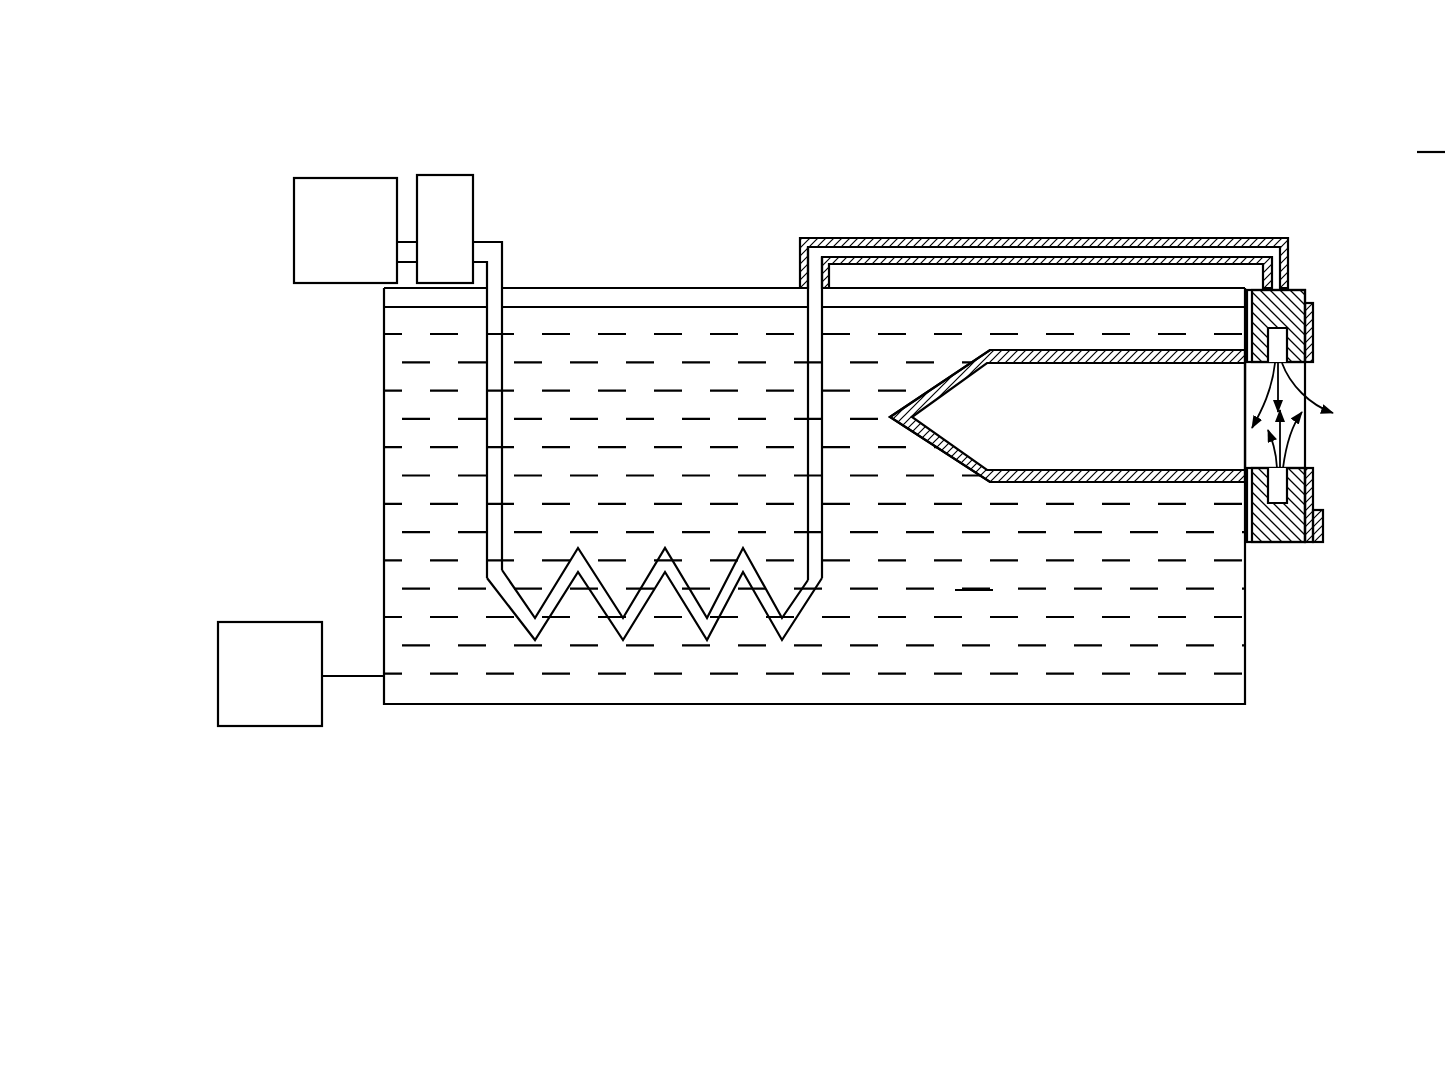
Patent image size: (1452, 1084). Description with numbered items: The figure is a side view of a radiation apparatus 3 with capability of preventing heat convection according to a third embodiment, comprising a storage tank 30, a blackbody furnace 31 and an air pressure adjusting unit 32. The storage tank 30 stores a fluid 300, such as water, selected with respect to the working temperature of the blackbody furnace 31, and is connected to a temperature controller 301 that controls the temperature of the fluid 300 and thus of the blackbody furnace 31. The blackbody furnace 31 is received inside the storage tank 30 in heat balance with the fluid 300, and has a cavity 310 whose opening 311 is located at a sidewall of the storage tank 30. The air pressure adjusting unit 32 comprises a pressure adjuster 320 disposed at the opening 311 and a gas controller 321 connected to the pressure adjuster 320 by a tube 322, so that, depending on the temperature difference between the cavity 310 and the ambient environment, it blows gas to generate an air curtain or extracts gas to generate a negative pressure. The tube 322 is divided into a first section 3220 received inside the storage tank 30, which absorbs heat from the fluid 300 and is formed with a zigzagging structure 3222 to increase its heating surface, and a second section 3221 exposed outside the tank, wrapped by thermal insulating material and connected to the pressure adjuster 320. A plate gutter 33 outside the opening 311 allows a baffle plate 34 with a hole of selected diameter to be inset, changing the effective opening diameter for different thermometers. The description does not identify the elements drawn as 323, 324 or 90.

The radiation apparatus 3 is at (272, 157).
The storage tank 30 is at (383, 605).
The fluid 300 is at (814, 504).
The temperature controller 301 is at (235, 668).
The blackbody furnace 31 is at (1135, 483).
The cavity 310 is at (1101, 495).
The opening 311 is at (1235, 407).
The air pressure adjusting unit 32 is at (1327, 270).
The pressure adjuster 320 is at (1298, 547).
The gas controller 321 is at (325, 245).
The tube 322 is at (698, 150).
The first section 3220 is at (498, 430).
The second section 3221 is at (838, 249).
The zigzagging structure 3222 is at (607, 590).
The outer pipe 323 is at (1103, 240).
The heater 324 is at (457, 182).
The plate gutter 33 is at (1322, 528).
The baffle plate 34 is at (1312, 475).
The gas 90 is at (1431, 134).